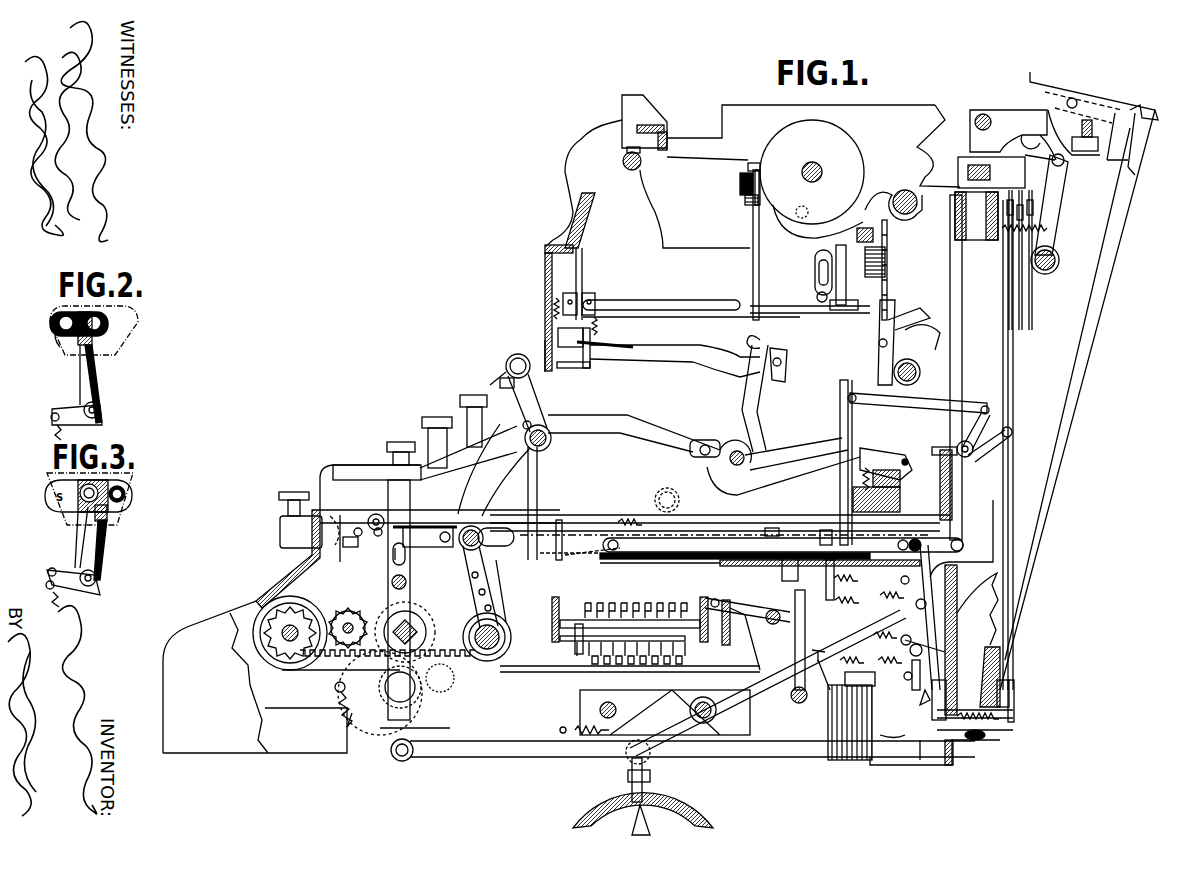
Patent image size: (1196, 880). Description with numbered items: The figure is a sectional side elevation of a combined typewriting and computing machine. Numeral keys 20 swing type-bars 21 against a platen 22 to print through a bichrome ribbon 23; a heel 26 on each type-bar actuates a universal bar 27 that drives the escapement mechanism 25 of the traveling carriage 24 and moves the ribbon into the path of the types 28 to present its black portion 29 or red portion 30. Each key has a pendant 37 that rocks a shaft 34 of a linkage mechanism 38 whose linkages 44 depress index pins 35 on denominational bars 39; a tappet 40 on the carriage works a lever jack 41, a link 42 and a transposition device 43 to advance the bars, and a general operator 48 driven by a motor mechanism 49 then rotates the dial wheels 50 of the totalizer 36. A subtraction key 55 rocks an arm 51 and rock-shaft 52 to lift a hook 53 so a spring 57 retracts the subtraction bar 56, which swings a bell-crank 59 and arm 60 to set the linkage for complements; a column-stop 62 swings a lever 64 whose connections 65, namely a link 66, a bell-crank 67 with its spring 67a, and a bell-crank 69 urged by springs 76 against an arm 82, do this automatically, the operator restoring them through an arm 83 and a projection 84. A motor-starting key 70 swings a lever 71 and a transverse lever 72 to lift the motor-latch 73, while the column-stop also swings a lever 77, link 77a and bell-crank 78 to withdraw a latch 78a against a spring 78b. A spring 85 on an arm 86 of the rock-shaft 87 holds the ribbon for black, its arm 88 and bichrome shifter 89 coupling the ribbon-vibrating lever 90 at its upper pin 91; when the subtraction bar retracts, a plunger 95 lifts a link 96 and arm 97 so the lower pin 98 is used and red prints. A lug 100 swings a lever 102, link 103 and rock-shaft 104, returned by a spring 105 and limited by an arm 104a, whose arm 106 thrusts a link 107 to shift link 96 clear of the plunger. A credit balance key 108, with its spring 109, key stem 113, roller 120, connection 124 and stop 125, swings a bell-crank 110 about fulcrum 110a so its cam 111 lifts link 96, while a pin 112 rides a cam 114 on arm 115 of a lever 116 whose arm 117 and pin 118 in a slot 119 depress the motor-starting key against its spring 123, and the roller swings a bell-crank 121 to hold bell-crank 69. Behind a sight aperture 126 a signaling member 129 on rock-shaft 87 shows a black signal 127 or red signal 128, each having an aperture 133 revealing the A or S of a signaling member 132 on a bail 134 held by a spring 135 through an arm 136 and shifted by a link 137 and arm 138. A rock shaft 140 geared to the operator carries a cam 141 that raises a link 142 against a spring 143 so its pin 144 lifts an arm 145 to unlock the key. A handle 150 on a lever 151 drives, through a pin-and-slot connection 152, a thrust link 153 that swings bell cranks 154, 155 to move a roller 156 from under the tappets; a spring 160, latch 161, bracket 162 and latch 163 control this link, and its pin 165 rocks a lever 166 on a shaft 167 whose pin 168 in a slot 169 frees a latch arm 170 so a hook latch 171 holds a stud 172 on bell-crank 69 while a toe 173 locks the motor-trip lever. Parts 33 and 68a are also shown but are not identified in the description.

In FIG. 1, the numeral keys 20 is at (505, 372).
In FIG. 1, the type-bars 21 is at (670, 360).
In FIG. 1, the platen 22 is at (812, 172).
In FIG. 1, the bichrome ribbon 23 is at (724, 196).
In FIG. 1, the traveling carriage 24 is at (866, 171).
In FIG. 1, the escapement mechanism 25 is at (896, 277).
In FIG. 1, the heel 26 is at (745, 337).
In FIG. 1, the universal bar 27 is at (748, 292).
In FIG. 1, the types 28 is at (556, 330).
In FIG. 1, the black portion 29 is at (738, 182).
In FIG. 1, the red portion 30 is at (745, 200).
In FIG. 1, the rail 33 is at (630, 654).
In FIG. 1, the shaft 34 is at (571, 621).
In FIG. 1, the index pins 35 is at (592, 660).
In FIG. 1, the totalizer 36 is at (247, 654).
In FIG. 1, the pendant 37 is at (540, 485).
In FIG. 1, the linkage mechanism 38 is at (648, 600).
In FIG. 1, the denominational bars 39 is at (323, 670).
In FIG. 1, the tappet 40 is at (1040, 108).
In FIG. 1, the lever jack 41 is at (1105, 108).
In FIG. 1, the link 42 is at (1140, 150).
In FIG. 1, the transposition device 43 is at (848, 767).
In FIG. 1, the linkages 44 is at (590, 643).
In FIG. 1, the general operator 48 is at (712, 710).
In FIG. 1, the motor mechanism 49 is at (576, 818).
In FIG. 1, the dial wheels 50 is at (272, 600).
In FIG. 1, the arm 51 is at (797, 598).
In FIG. 1, the rock-shaft 52 is at (790, 680).
In FIG. 1, the hook 53 is at (822, 693).
In FIG. 1, the subtraction key 55 is at (279, 516).
In FIG. 1, the subtraction bar 56 is at (445, 688).
In FIG. 1, the spring 57 is at (854, 647).
In FIG. 1, the bell-crank 59 is at (758, 628).
In FIG. 1, the arm 60 is at (762, 618).
In FIG. 1, the column-stop 62 is at (1006, 171).
In FIG. 1, the lever 64 is at (1024, 202).
In FIG. 1, the connections 65 is at (820, 708).
In FIG. 1, the link 66 is at (1013, 560).
In FIG. 1, the bell-crank 67 is at (1010, 724).
In FIG. 1, the spring 67a is at (936, 752).
In FIG. 1, the lever 68a is at (899, 750).
In FIG. 1, the bell-crank 69 is at (886, 649).
In FIG. 1, the motor-starting key 70 is at (376, 466).
In FIG. 1, the lever 71 is at (500, 757).
In FIG. 1, the transverse lever 72 is at (630, 778).
In FIG. 1, the motor-latch 73 is at (652, 778).
In FIG. 1, the springs 76 is at (915, 590).
In FIG. 1, the lever 77 is at (976, 216).
In FIG. 1, the link 77a is at (957, 613).
In FIG. 1, the bell-crank 78 is at (952, 696).
In FIG. 1, the latch 78a is at (950, 680).
In FIG. 1, the spring 78b is at (990, 730).
In FIG. 1, the arm 82 is at (814, 647).
In FIG. 1, the arm 83 is at (665, 712).
In FIG. 1, the projection 84 is at (560, 730).
In FIG. 1, the spring 85 is at (548, 356).
In FIG. 2, the arm 86 is at (76, 409).
In FIG. 3, the arm 86 is at (72, 592).
In FIG. 2, the rock-shaft 87 is at (100, 410).
In FIG. 1, the rock-shaft 87 is at (645, 300).
In FIG. 1, the arm 88 is at (838, 287).
In FIG. 1, the bichrome shifter 89 is at (818, 258).
In FIG. 1, the ribbon-vibrating lever 90 is at (860, 340).
In FIG. 1, the upper pin 91 is at (818, 276).
In FIG. 1, the plunger 95 is at (850, 602).
In FIG. 1, the link 96 is at (842, 440).
In FIG. 1, the arm 97 is at (870, 325).
In FIG. 1, the lower pin 98 is at (818, 297).
In FIG. 1, the lug 100 is at (1014, 196).
In FIG. 1, the lever 102 is at (1034, 210).
In FIG. 1, the link 103 is at (1015, 340).
In FIG. 1, the rock-shaft 104 is at (902, 484).
In FIG. 1, the arm 104a is at (975, 465).
In FIG. 1, the spring 105 is at (950, 446).
In FIG. 1, the arm 106 is at (962, 440).
In FIG. 1, the link 107 is at (940, 400).
In FIG. 1, the credit balance key 108 is at (280, 540).
In FIG. 1, the spring 109 is at (770, 528).
In FIG. 1, the bell-crank 110 is at (704, 560).
In FIG. 1, the fulcrum 110a is at (745, 563).
In FIG. 1, the cam 111 is at (822, 530).
In FIG. 1, the pin 112 is at (352, 533).
In FIG. 1, the key stem 113 is at (338, 555).
In FIG. 1, the cam 114 is at (356, 537).
In FIG. 1, the arm 115 is at (402, 548).
In FIG. 1, the lever 116 is at (410, 575).
In FIG. 1, the arm 117 is at (425, 536).
In FIG. 1, the pin 118 is at (384, 515).
In FIG. 1, the slot 119 is at (376, 514).
In FIG. 1, the roller 120 is at (782, 568).
In FIG. 1, the bell-crank 121 is at (830, 596).
In FIG. 1, the spring 123 is at (342, 704).
In FIG. 1, the connection 124 is at (738, 530).
In FIG. 1, the stop 125 is at (343, 530).
In FIG. 1, the aperture 126 is at (578, 222).
In FIG. 2, the signal 127 is at (104, 321).
In FIG. 3, the signal 127 is at (128, 489).
In FIG. 2, the signal 128 is at (60, 327).
In FIG. 3, the signal 128 is at (80, 485).
In FIG. 2, the signaling member 129 is at (80, 373).
In FIG. 3, the signaling member 129 is at (101, 552).
In FIG. 1, the signaling member 129 is at (575, 272).
In FIG. 2, the signaling member 132 is at (100, 373).
In FIG. 3, the signaling member 132 is at (76, 548).
In FIG. 1, the signaling member 132 is at (584, 250).
In FIG. 2, the aperture 133 is at (54, 319).
In FIG. 3, the aperture 133 is at (126, 499).
In FIG. 3, the bail 134 is at (98, 590).
In FIG. 1, the bail 134 is at (677, 317).
In FIG. 1, the spring 135 is at (598, 323).
In FIG. 2, the arm 136 is at (50, 418).
In FIG. 3, the arm 136 is at (55, 595).
In FIG. 1, the link 137 is at (856, 432).
In FIG. 1, the arm 138 is at (878, 350).
In FIG. 1, the rock shaft 140 is at (500, 632).
In FIG. 1, the cam 141 is at (508, 645).
In FIG. 1, the link 142 is at (470, 570).
In FIG. 1, the spring 143 is at (496, 588).
In FIG. 1, the pin 144 is at (492, 540).
In FIG. 1, the arm 145 is at (500, 520).
In FIG. 1, the handle 150 is at (514, 358).
In FIG. 1, the lever 151 is at (540, 402).
In FIG. 1, the pin-and-slot connection 152 is at (470, 530).
In FIG. 1, the thrust link 153 is at (575, 528).
In FIG. 1, the bell crank 154 is at (958, 335).
In FIG. 1, the bell crank 155 is at (1058, 242).
In FIG. 1, the roller 156 is at (1068, 180).
In FIG. 1, the spring 160 is at (628, 522).
In FIG. 1, the latch 161 is at (608, 556).
In FIG. 1, the bracket 162 is at (640, 560).
In FIG. 1, the latch 163 is at (560, 560).
In FIG. 1, the pin 165 is at (912, 542).
In FIG. 1, the lever 166 is at (900, 576).
In FIG. 1, the shaft 167 is at (925, 615).
In FIG. 1, the pin 168 is at (945, 652).
In FIG. 1, the slot 169 is at (920, 640).
In FIG. 1, the latch arm 170 is at (918, 610).
In FIG. 1, the hook latch 171 is at (918, 670).
In FIG. 1, the stud 172 is at (908, 680).
In FIG. 1, the toe 173 is at (928, 692).